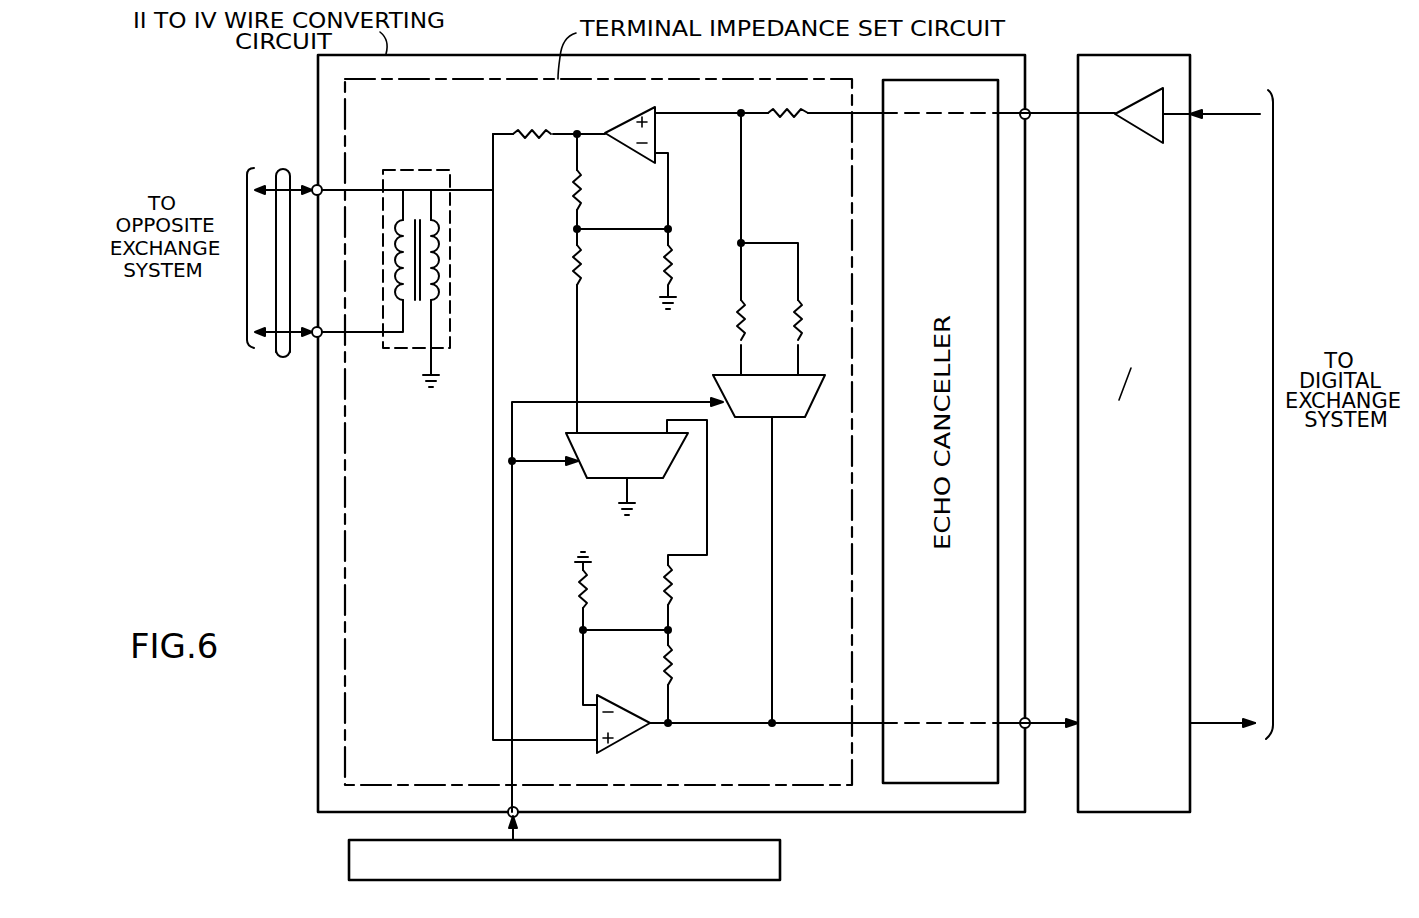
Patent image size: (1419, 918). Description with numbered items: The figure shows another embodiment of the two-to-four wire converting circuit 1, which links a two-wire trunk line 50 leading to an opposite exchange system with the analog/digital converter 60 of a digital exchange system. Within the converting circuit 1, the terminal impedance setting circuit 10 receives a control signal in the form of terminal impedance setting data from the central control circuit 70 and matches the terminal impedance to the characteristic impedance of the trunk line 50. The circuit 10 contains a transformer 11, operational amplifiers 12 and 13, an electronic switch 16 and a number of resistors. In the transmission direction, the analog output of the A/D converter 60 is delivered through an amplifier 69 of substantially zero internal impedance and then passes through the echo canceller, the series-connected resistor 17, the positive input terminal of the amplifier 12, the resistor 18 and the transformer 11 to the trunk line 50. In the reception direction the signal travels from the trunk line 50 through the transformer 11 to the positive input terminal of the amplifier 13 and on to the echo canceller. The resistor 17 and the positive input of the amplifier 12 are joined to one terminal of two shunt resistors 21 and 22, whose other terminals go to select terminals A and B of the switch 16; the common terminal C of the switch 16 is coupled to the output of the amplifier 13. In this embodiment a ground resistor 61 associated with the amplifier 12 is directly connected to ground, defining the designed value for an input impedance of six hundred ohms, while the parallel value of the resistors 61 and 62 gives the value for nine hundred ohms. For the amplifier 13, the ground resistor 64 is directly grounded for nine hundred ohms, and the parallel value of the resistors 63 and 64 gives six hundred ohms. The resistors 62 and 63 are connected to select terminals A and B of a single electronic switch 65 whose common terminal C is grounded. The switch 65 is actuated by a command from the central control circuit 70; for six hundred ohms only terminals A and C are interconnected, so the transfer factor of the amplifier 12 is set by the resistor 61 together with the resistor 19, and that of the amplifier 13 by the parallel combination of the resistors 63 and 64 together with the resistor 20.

The 2 to 4 converting circuit 1 is at (467, 55).
The terminal impedance setting circuit 10 is at (503, 79).
The transformer 11 is at (418, 170).
The operational amplifier 12 is at (623, 117).
The operational amplifier 13 is at (626, 738).
The electronic switch 16 is at (819, 400).
The series-connected resistor 17 is at (791, 110).
The resistor 18 is at (543, 128).
The resistor 19 is at (583, 188).
The resistor 20 is at (702, 652).
The shunt resistor 21 is at (748, 310).
The shunt resistor 22 is at (804, 310).
The trunk line 50 is at (283, 357).
The analog/digital (A/D) converter 60 is at (1147, 54).
The ground resistor 61 is at (672, 256).
The ground resistor 62 is at (582, 265).
The ground resistor 63 is at (680, 586).
The ground resistor 64 is at (588, 588).
The electronic switch 65 is at (584, 472).
The amplifier 69 is at (1145, 146).
The central control circuit 70 is at (783, 860).